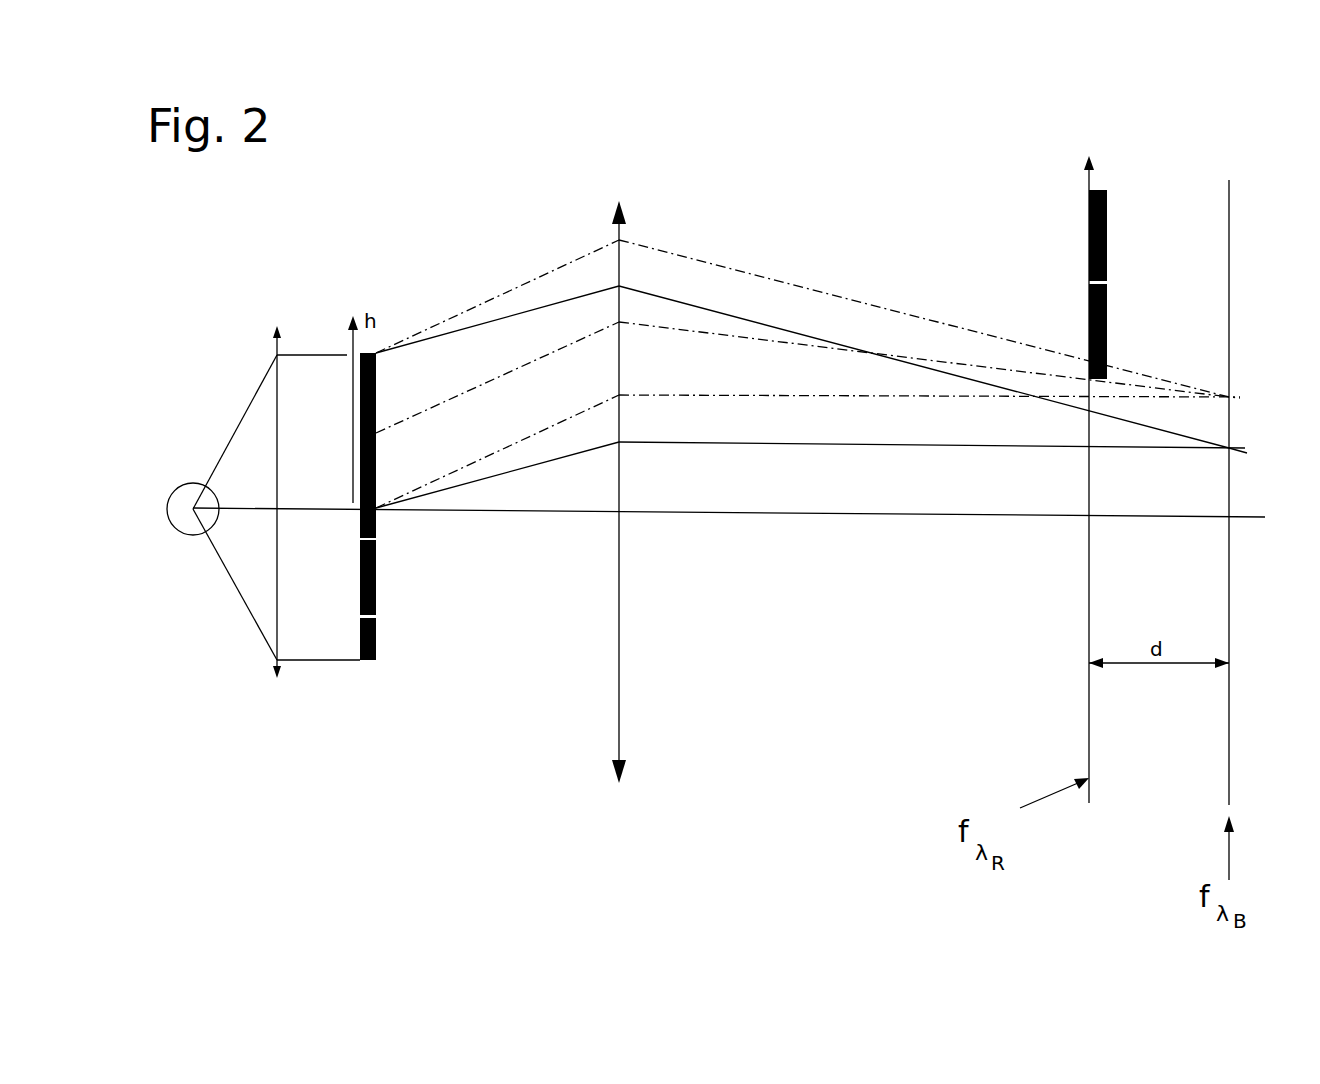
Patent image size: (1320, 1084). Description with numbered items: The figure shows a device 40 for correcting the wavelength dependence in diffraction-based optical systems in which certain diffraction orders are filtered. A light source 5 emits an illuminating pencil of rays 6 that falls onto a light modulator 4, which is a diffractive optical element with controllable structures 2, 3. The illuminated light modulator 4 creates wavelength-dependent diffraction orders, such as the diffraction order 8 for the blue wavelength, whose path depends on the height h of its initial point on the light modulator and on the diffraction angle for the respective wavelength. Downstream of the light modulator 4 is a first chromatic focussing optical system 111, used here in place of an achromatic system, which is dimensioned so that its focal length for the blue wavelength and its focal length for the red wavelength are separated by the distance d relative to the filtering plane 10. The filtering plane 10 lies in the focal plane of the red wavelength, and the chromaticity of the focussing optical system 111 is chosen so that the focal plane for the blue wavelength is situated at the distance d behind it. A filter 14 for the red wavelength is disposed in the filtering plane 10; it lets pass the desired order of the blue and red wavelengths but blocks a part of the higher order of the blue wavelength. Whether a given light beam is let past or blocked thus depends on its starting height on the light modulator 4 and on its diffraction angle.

The controllable structure 2 is at (378, 390).
The controllable structure 3 is at (378, 610).
The light modulator 4 is at (382, 652).
The light source 5 is at (180, 485).
The illuminating pencil of rays 6 is at (322, 662).
The wavelength-dependent diffraction order 8 is at (745, 320).
The filtering plane 10 is at (1089, 600).
The filter 14 is at (1107, 256).
The device 40 is at (871, 172).
The first chromatic focussing optical system 111 is at (621, 703).